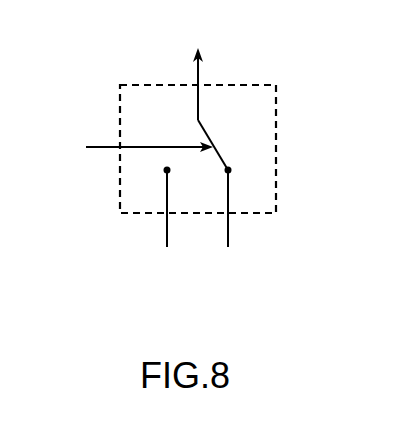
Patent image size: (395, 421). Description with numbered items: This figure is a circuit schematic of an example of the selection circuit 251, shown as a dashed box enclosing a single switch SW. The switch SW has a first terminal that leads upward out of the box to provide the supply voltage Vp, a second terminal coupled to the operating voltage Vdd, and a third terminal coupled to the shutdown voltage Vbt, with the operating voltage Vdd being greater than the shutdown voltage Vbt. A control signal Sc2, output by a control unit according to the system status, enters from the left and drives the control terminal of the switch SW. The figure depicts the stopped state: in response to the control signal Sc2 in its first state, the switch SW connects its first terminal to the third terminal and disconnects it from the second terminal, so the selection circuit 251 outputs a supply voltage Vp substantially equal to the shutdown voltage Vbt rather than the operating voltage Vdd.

The selection circuit 251 is at (118, 93).
The switch SW is at (214, 147).
The supply voltage Vp is at (195, 71).
The control signal Sc2 is at (126, 146).
The operating voltage Vdd is at (169, 225).
The shutdown voltage Vbt is at (229, 225).